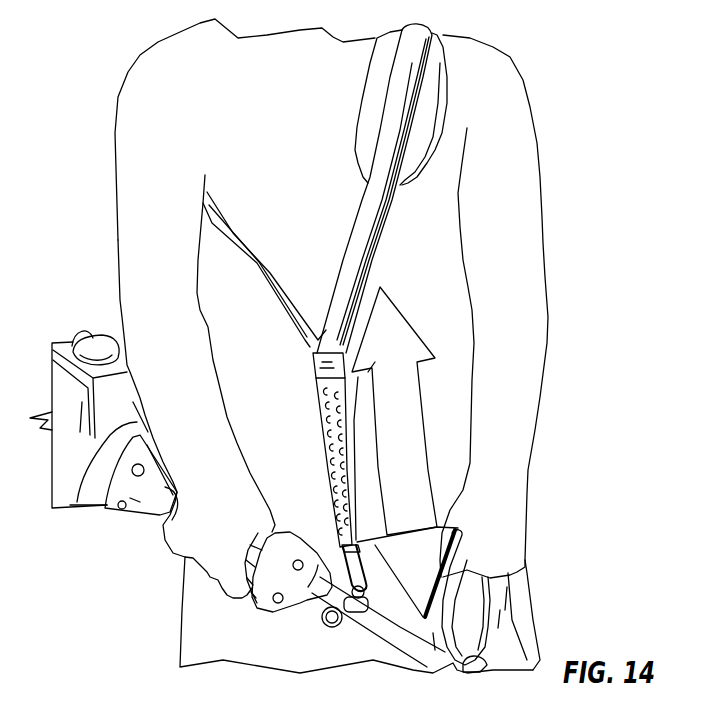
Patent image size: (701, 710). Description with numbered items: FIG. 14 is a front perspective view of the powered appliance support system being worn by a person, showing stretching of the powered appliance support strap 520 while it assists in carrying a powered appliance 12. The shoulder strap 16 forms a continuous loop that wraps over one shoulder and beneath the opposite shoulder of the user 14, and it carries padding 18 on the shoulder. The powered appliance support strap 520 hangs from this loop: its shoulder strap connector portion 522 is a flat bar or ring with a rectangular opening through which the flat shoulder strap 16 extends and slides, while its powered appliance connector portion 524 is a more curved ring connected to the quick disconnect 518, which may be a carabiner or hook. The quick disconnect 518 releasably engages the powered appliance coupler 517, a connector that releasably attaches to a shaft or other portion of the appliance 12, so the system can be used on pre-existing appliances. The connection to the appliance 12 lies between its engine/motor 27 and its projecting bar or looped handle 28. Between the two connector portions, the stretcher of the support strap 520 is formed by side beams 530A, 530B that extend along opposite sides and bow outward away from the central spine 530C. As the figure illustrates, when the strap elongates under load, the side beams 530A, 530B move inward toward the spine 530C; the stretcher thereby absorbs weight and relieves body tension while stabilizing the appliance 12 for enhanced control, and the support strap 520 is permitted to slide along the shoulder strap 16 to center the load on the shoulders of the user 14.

The powered appliance 12 is at (58, 346).
The user 14 is at (503, 50).
The shoulder strap 16 is at (382, 217).
The padding 18 is at (430, 92).
The engine/motor 27 is at (70, 505).
The looped handle 28 is at (507, 606).
The powered appliance coupler 517 is at (355, 605).
The quick disconnect 518 is at (340, 550).
The powered appliance support strap 520 is at (327, 142).
The shoulder strap connector portion 522 is at (383, 288).
The powered appliance connector portion 524 is at (458, 528).
The side beam 530A is at (322, 441).
The side beam 530B is at (368, 372).
The spine beam 530C is at (320, 385).